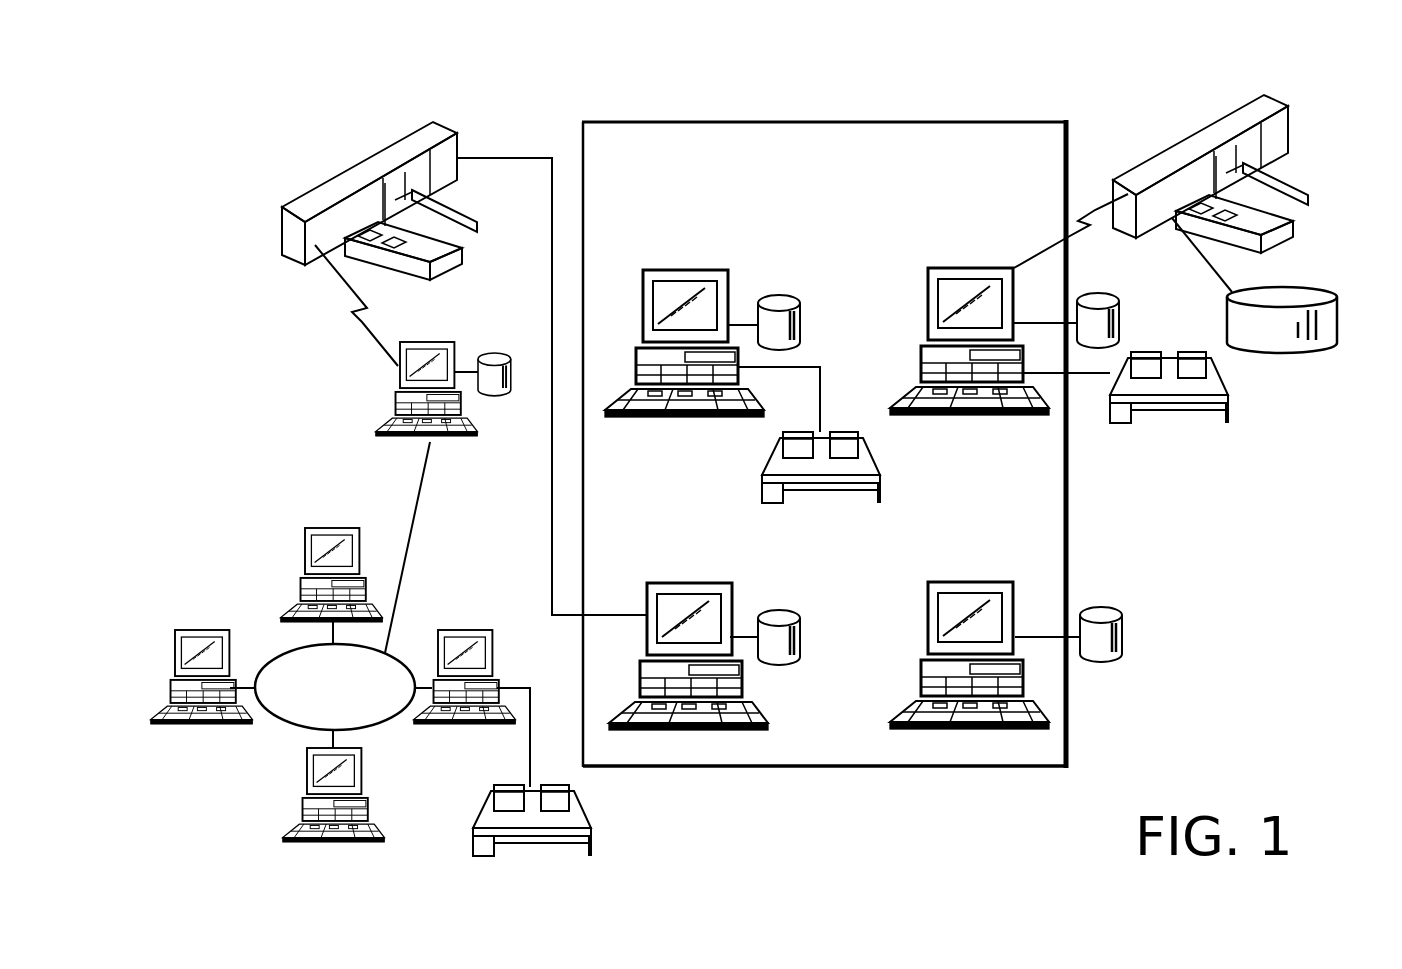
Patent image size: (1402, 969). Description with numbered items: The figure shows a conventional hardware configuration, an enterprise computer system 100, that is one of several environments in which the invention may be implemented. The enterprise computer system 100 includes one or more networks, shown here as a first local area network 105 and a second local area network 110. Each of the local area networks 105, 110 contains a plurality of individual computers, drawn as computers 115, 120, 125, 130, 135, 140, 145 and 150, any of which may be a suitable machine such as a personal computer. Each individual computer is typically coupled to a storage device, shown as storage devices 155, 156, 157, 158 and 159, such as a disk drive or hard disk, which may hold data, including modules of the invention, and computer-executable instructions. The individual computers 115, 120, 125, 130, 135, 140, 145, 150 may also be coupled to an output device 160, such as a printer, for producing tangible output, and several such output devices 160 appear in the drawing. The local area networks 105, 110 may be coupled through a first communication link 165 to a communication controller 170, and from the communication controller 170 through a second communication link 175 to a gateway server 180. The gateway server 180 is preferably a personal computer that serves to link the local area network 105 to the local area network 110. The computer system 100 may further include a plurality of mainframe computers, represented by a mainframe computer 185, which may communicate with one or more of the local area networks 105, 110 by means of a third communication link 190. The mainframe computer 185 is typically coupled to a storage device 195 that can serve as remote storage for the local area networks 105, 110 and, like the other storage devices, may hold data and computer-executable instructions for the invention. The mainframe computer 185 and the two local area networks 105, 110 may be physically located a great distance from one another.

The enterprise computer system 100 is at (569, 132).
The local area network 105 is at (712, 177).
The local area network 110 is at (302, 730).
The individual computer 115 is at (718, 270).
The individual computer 120 is at (990, 268).
The individual computer 125 is at (718, 583).
The individual computer 130 is at (1000, 582).
The individual computer 135 is at (487, 630).
The individual computer 140 is at (363, 790).
The individual computer 145 is at (218, 630).
The individual computer 150 is at (348, 528).
The storage device 155 is at (800, 325).
The storage device 156 is at (803, 640).
The storage device 157 is at (486, 395).
The storage device 158 is at (1122, 635).
The storage device 159 is at (1120, 322).
The output device 160 is at (797, 487).
The first communication link 165 is at (548, 258).
The communication controller 170 is at (308, 202).
The second communication link 175 is at (352, 330).
The gateway server 180 is at (413, 342).
The mainframe computer 185 is at (1290, 132).
The third communication link 190 is at (1082, 210).
The storage device 195 is at (1337, 325).